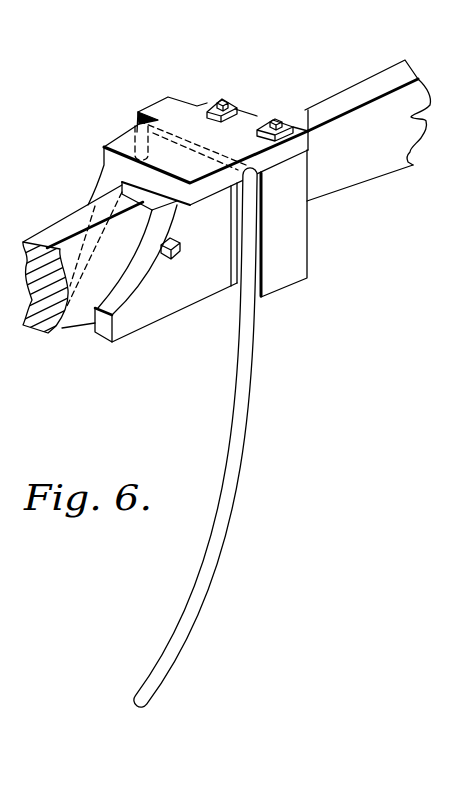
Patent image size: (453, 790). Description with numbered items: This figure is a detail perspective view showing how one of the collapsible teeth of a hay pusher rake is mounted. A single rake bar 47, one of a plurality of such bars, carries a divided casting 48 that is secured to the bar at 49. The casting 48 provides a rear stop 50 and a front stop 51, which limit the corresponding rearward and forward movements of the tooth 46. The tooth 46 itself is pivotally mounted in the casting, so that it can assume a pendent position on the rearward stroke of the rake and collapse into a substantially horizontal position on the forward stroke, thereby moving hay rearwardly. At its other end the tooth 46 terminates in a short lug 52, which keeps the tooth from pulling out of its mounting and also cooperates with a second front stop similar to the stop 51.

The collapsible tooth 46 is at (266, 383).
The rake bar 47 is at (223, 203).
The divided casting 48 is at (171, 295).
The securing means 49 is at (269, 122).
The rear stop 50 is at (178, 244).
The front stop 51 is at (297, 254).
The short lug 52 is at (134, 144).